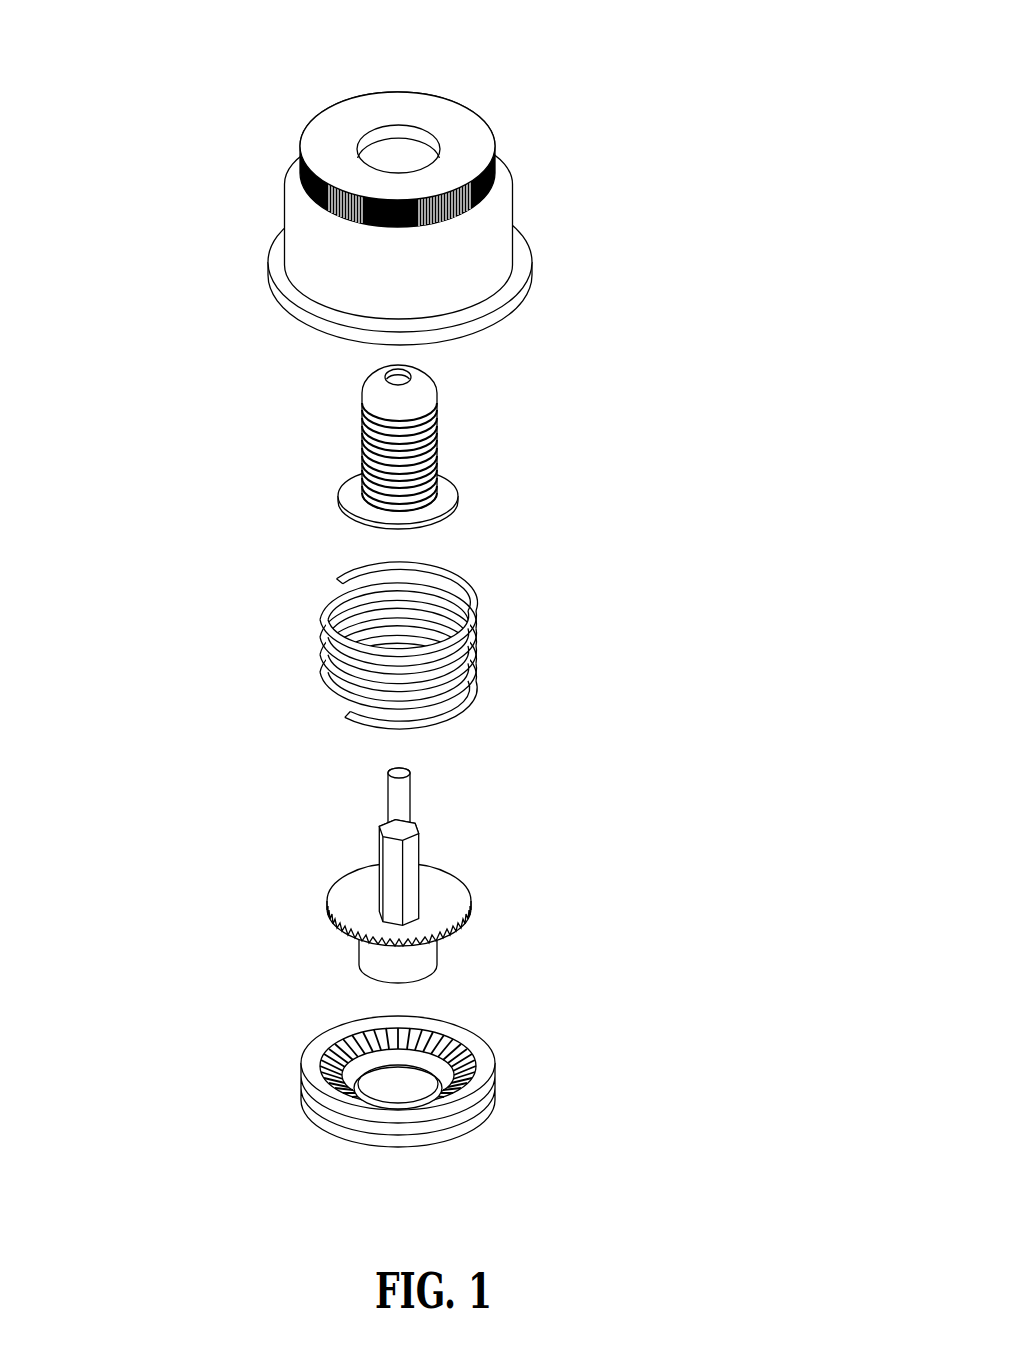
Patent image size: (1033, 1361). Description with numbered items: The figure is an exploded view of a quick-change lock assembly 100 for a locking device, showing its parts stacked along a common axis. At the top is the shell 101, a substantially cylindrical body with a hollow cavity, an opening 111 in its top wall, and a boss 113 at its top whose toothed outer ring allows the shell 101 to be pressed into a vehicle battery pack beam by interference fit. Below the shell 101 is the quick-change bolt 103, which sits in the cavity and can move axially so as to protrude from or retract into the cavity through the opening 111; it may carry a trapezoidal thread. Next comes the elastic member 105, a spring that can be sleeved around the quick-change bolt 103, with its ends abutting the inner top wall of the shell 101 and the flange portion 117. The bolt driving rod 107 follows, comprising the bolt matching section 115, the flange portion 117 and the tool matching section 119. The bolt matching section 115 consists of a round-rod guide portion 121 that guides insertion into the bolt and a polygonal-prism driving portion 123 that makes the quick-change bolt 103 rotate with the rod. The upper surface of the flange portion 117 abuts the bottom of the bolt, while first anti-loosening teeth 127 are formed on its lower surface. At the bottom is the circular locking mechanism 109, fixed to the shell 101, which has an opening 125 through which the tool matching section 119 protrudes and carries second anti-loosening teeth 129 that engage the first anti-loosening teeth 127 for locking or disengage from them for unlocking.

The quick-change lock assembly 100 is at (160, 47).
The shell 101 is at (610, 212).
The quick-change bolt 103 is at (570, 435).
The elastic member 105 is at (570, 628).
The bolt driving rod 107 is at (562, 880).
The locking mechanism 109 is at (580, 1072).
The opening 111 is at (400, 153).
The boss 113 is at (463, 155).
The bolt matching section 115 is at (218, 818).
The flange portion 117 is at (340, 900).
The tool matching section 119 is at (397, 973).
The guide portion 121 is at (387, 797).
The driving portion 123 is at (377, 850).
The opening 125 is at (472, 1128).
The first anti-loosening teeth 127 is at (458, 937).
The second anti-loosening teeth 129 is at (455, 1038).